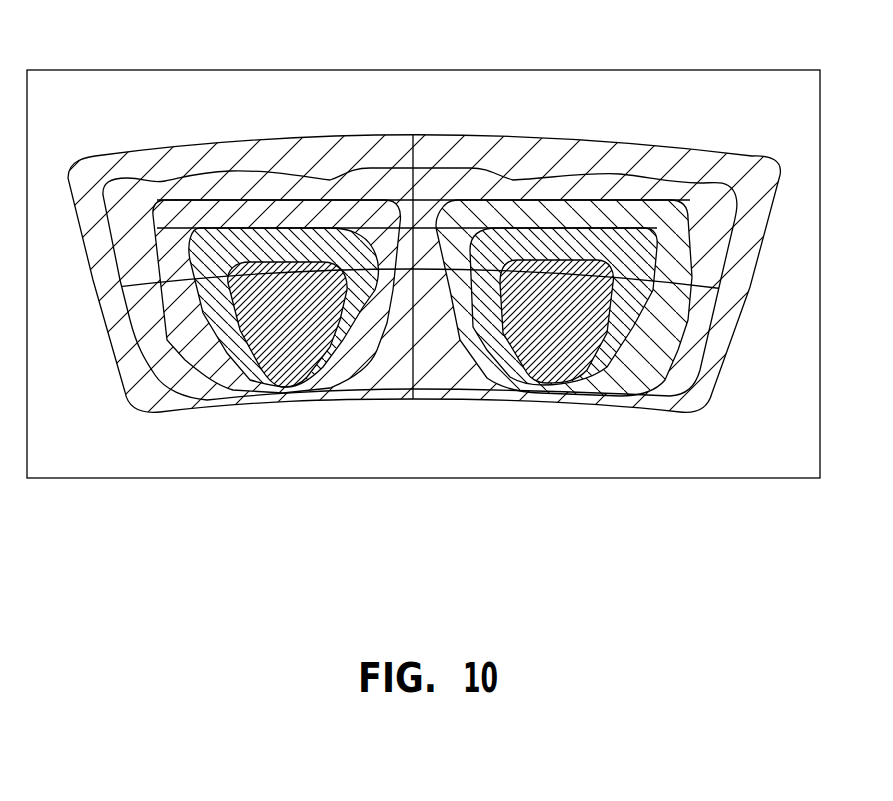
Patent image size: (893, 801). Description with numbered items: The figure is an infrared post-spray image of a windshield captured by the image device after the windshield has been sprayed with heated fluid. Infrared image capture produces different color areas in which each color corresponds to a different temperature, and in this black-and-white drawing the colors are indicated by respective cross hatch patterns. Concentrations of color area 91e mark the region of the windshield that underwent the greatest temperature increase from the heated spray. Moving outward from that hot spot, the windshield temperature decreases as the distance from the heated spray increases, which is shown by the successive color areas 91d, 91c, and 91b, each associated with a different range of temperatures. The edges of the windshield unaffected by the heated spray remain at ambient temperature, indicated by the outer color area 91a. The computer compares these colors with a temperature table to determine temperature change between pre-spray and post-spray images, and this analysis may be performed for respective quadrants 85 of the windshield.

The quadrant 85 is at (138, 397).
The color area 91a is at (95, 200).
The color area 91b is at (200, 185).
The color area 91c is at (280, 220).
The color area 91d is at (353, 243).
The color area 91e is at (293, 370).